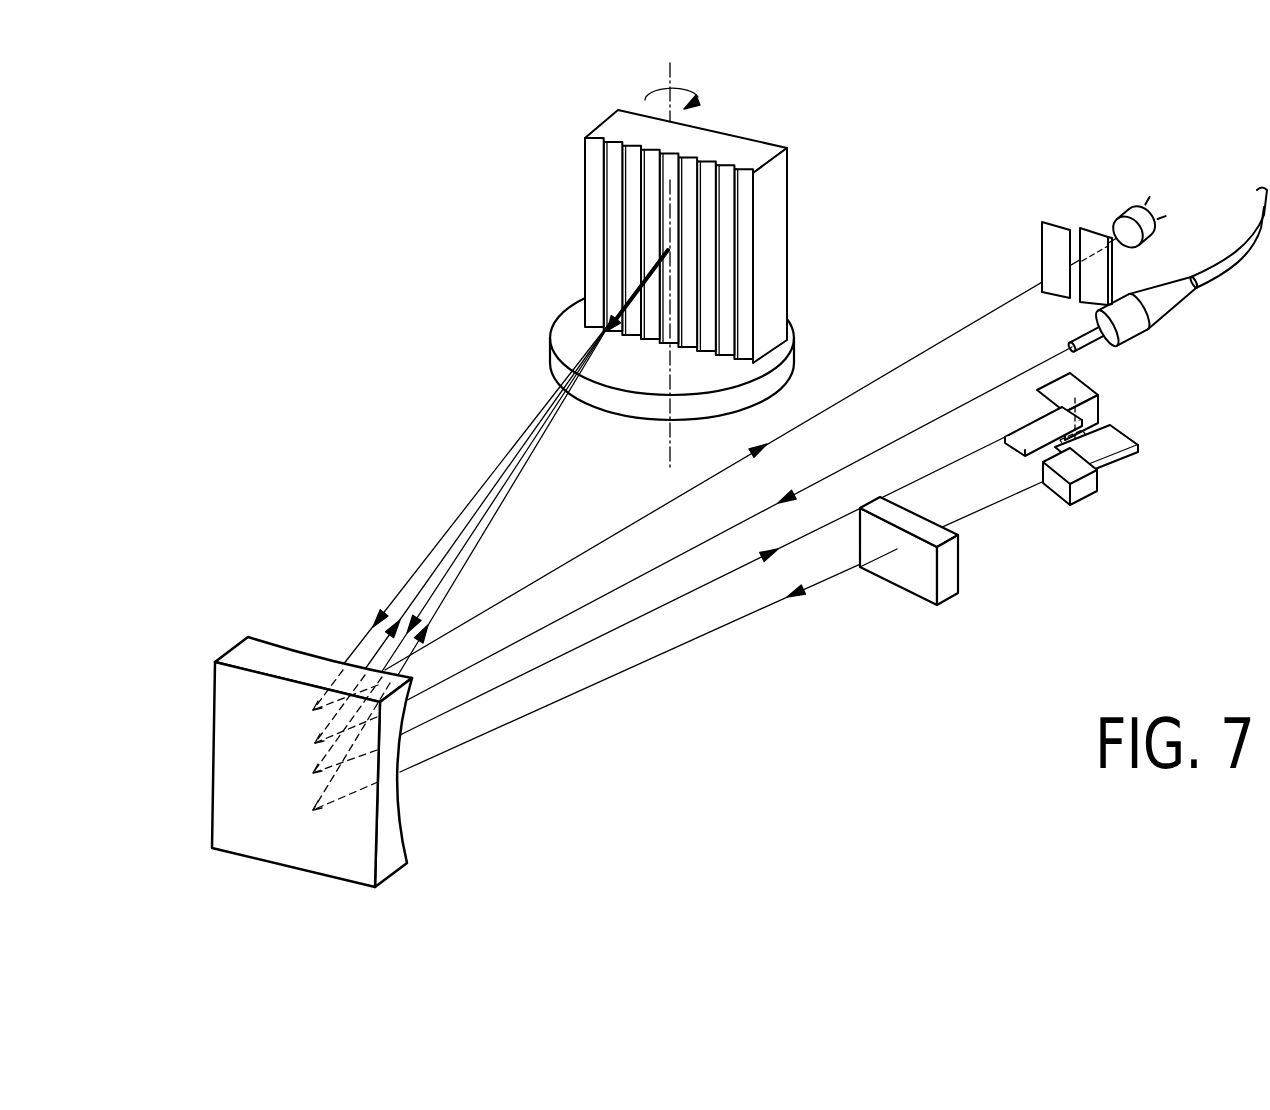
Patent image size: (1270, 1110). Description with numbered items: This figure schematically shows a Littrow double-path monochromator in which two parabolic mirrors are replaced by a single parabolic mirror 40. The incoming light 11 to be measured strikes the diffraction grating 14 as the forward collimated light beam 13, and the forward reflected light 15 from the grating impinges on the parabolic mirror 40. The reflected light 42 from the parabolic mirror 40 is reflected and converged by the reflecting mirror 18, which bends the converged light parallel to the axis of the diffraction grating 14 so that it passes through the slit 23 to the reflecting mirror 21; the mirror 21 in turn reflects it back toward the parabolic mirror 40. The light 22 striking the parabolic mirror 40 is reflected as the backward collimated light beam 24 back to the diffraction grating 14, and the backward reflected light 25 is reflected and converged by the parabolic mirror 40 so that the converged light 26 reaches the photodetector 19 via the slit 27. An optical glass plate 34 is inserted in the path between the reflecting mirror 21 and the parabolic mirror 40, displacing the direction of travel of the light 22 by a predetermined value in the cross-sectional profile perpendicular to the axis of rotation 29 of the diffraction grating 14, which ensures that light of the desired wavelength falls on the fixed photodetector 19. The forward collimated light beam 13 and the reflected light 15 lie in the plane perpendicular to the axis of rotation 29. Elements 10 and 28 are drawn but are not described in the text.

The optical fiber 10 is at (1095, 348).
The incoming light 11 is at (1007, 383).
The forward collimated light beam 13 is at (457, 533).
The diffraction grating 14 is at (752, 148).
The forward reflected light 15 is at (470, 538).
The reflecting mirror 18 is at (1098, 408).
The photodetector 19 is at (1133, 206).
The reflecting mirror 21 is at (1087, 487).
The light 22 is at (665, 652).
The slit 23 is at (1045, 462).
The backward collimated light beam 24 is at (523, 473).
The backward reflected light 25 is at (508, 456).
The converged light 26 is at (663, 500).
The slit 27 is at (1078, 222).
The scanner base 28 is at (793, 348).
The axis of rotation 29 is at (672, 70).
The optical glass plate 34 is at (947, 597).
The parabolic mirror 40 is at (228, 833).
The reflected light 42 is at (722, 580).